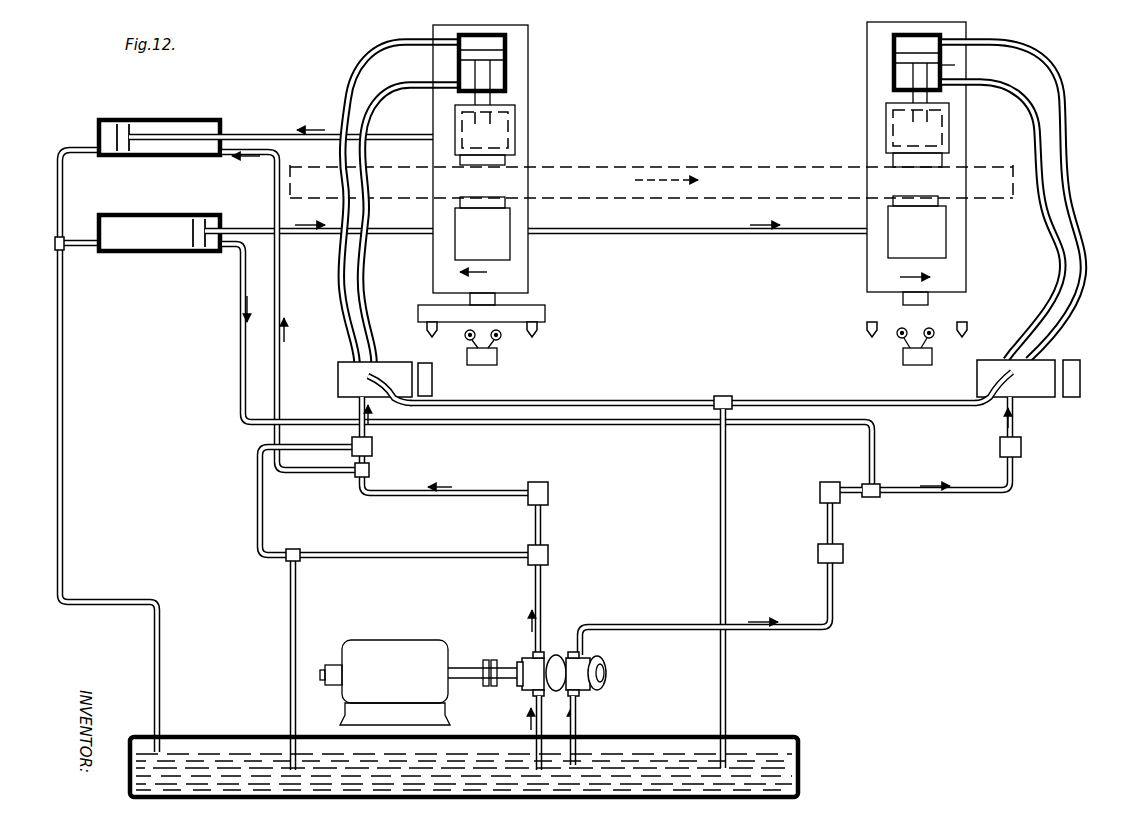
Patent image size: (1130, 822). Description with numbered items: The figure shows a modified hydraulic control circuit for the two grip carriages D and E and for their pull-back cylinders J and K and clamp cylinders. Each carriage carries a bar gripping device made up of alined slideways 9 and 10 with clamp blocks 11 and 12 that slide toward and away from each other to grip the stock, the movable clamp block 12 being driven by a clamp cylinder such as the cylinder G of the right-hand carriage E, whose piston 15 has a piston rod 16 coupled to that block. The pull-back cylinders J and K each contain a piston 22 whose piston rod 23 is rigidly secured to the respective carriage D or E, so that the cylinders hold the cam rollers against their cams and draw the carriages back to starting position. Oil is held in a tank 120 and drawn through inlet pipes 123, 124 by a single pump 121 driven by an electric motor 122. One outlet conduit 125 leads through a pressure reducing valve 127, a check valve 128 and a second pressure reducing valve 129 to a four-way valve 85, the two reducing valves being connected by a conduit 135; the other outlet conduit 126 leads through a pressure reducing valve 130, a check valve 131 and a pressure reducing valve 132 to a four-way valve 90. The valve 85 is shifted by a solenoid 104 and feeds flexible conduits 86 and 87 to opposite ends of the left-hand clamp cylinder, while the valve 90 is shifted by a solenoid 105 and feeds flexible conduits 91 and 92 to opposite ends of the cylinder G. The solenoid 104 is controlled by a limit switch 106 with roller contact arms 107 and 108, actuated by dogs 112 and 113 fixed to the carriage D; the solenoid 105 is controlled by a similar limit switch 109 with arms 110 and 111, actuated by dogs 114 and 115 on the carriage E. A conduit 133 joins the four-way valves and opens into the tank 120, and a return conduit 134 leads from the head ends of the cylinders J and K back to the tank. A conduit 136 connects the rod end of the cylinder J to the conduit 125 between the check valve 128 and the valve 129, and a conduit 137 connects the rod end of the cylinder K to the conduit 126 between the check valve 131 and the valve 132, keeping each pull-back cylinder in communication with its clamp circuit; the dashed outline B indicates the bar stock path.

The slideway 9 is at (505, 246).
The slideway 10 is at (487, 136).
The clamp block 11 is at (484, 200).
The clamp block 12 is at (482, 166).
The piston 15 is at (470, 52).
The piston rod 16 is at (482, 76).
The piston 22 is at (122, 130).
The piston rod 23 is at (263, 133).
The four-way control valve 85 is at (340, 372).
The flexible conduit 86 is at (410, 42).
The flexible conduit 87 is at (382, 92).
The four-way control valve 90 is at (1042, 386).
The flexible conduit 91 is at (1060, 238).
The flexible conduit 92 is at (1087, 228).
The solenoid 104 is at (433, 381).
The solenoid 105 is at (1082, 380).
The limit switch 106 is at (497, 362).
The roller contact arm 107 is at (466, 340).
The roller contact arm 108 is at (501, 339).
The limit switch 109 is at (906, 357).
The roller contact arm 110 is at (898, 337).
The roller contact arm 111 is at (934, 337).
The dog 112 is at (432, 334).
The dog 113 is at (546, 313).
The dog 114 is at (870, 334).
The dog 115 is at (968, 330).
The tank 120 is at (802, 769).
The pump 121 is at (592, 672).
The electric motor 122 is at (386, 658).
The inlet pipe 123 is at (533, 704).
The inlet pipe 124 is at (580, 706).
The outlet conduit 125 is at (360, 406).
The outlet conduit 126 is at (1012, 426).
The pressure reducing valve 127 is at (548, 556).
The check valve 128 is at (548, 495).
The pressure reducing valve 129 is at (373, 448).
The pressure reducing valve 130 is at (844, 553).
The check valve 131 is at (838, 504).
The pressure reducing valve 132 is at (1021, 449).
The conduit 133 is at (716, 397).
The return conduit 134 is at (60, 190).
The conduit 135 is at (260, 518).
The conduit 136 is at (284, 312).
The conduit 137 is at (243, 346).
The conveyor path B is at (745, 163).
The carriage D is at (530, 95).
The carriage E is at (870, 45).
The hydraulic cylinder G is at (955, 65).
The hydraulic cylinder J is at (170, 118).
The hydraulic cylinder K is at (150, 252).